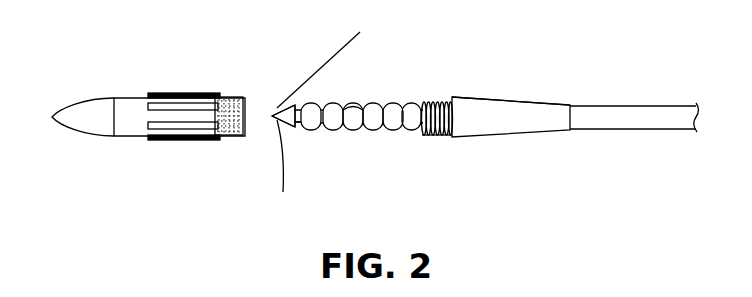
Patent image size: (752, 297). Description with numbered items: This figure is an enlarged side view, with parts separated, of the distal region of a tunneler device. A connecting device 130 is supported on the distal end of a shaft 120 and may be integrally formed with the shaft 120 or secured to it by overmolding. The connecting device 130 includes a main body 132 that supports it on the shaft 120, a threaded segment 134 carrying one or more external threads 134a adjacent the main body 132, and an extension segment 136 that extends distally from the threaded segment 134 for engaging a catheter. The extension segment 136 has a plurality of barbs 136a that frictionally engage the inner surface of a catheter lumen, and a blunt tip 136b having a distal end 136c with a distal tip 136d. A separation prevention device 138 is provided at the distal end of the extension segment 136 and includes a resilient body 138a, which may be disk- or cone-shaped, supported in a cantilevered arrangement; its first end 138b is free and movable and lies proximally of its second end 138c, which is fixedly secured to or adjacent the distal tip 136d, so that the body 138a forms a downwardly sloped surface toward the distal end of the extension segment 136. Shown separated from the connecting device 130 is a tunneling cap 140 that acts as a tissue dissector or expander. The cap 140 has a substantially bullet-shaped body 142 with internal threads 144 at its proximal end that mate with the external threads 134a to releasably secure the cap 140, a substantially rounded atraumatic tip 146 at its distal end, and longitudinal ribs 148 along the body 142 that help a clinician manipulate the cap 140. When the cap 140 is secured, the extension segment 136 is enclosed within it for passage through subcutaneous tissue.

The shaft 120 is at (655, 105).
The connecting device 130 is at (507, 92).
The main body 132 is at (548, 98).
The threaded segment 134 is at (436, 100).
The external threads 134a is at (437, 138).
The extension segment 136 is at (372, 132).
The barbs 136a is at (352, 102).
The blunt tip 136b is at (292, 135).
The distal end 136c is at (341, 65).
The distal tip 136d is at (281, 171).
The separation prevention device 138 is at (274, 94).
The resilient body 138a is at (271, 104).
The first end 138b is at (281, 101).
The second end 138c is at (270, 128).
The tunneling cap 140 is at (120, 91).
The substantially bullet-shaped body 142 is at (140, 93).
The internal threads 144 is at (215, 140).
The atraumatic tip 146 is at (52, 120).
The longitudinal ribs 148 is at (160, 138).